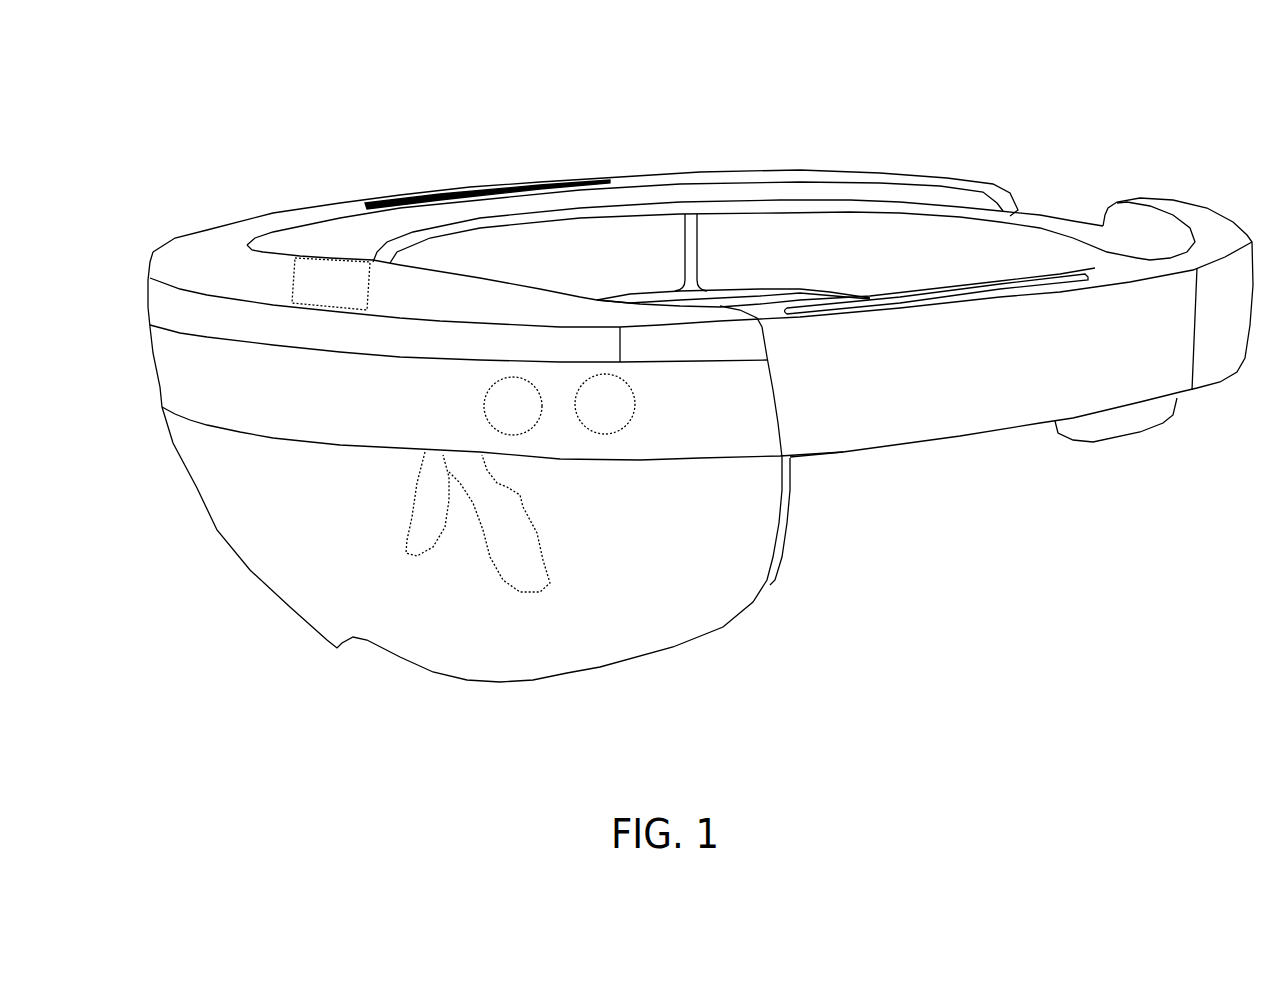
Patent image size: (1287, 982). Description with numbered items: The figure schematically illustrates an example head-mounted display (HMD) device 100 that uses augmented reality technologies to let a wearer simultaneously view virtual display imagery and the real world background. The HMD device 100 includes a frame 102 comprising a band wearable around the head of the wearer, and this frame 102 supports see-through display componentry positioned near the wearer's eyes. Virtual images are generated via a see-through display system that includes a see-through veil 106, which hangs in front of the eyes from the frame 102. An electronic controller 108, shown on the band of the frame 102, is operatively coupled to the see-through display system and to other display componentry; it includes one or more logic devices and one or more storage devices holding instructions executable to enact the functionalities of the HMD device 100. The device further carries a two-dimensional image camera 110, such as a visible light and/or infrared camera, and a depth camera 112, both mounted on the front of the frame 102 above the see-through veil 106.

The head-mounted display device 100 is at (1150, 120).
The frame 102 is at (999, 374).
The see-through veil 106 is at (772, 582).
The electronic controller 108 is at (316, 294).
The two-dimensional image camera 110 is at (496, 417).
The depth camera 112 is at (588, 415).